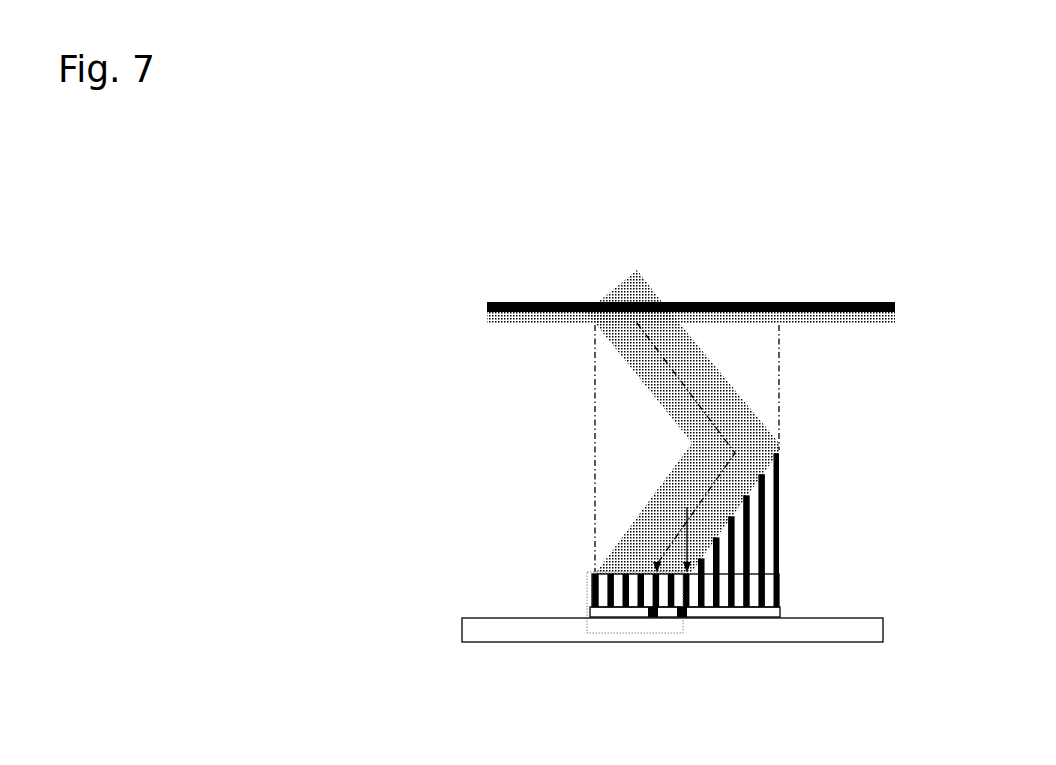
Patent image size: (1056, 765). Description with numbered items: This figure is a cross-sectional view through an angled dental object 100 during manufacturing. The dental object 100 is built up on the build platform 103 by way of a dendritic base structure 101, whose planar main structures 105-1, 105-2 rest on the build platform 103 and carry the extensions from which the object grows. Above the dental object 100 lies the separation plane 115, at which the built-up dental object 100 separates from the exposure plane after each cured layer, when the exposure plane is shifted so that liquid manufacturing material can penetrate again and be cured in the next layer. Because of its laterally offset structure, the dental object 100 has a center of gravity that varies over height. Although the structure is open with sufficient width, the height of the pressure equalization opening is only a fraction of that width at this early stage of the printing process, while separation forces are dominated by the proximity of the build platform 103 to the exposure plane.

The separation plane 115 is at (855, 302).
The dental object 100 is at (652, 387).
The dendritic base structure 101 is at (590, 610).
The build platform 103 is at (862, 632).
The planar main structure 105-1 is at (685, 617).
The planar main structure 105-2 is at (655, 617).